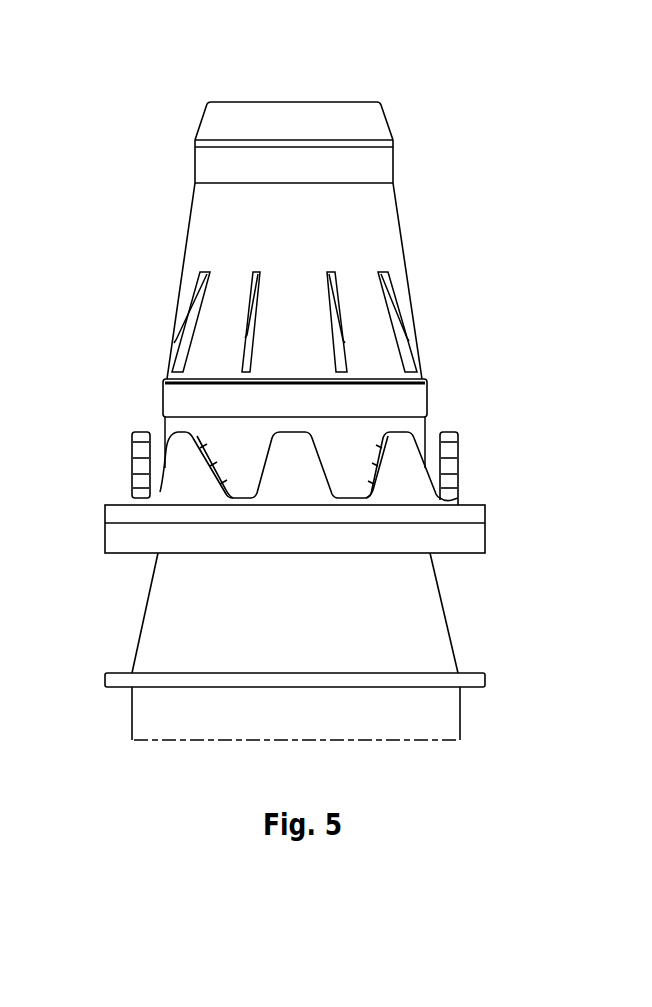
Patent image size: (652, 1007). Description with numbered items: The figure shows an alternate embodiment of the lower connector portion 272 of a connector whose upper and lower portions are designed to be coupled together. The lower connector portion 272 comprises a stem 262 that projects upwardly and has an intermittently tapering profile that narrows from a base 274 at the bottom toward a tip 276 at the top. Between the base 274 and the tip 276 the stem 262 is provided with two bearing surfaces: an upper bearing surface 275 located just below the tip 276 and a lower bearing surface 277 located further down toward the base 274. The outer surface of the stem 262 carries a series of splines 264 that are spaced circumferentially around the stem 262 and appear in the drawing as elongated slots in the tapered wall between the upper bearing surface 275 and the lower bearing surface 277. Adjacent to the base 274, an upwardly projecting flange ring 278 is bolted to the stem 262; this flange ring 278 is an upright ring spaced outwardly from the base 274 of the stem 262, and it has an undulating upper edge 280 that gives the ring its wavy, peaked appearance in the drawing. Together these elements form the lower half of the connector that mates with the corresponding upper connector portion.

The lower connector portion 272 is at (137, 145).
The tip 276 is at (427, 145).
The upper bearing surface 275 is at (195, 170).
The stem 262 is at (482, 332).
The splines 264 is at (190, 309).
The lower bearing surface 277 is at (163, 397).
The flange ring 278 is at (182, 483).
The undulating upper edge 280 is at (430, 468).
The base 274 is at (457, 638).